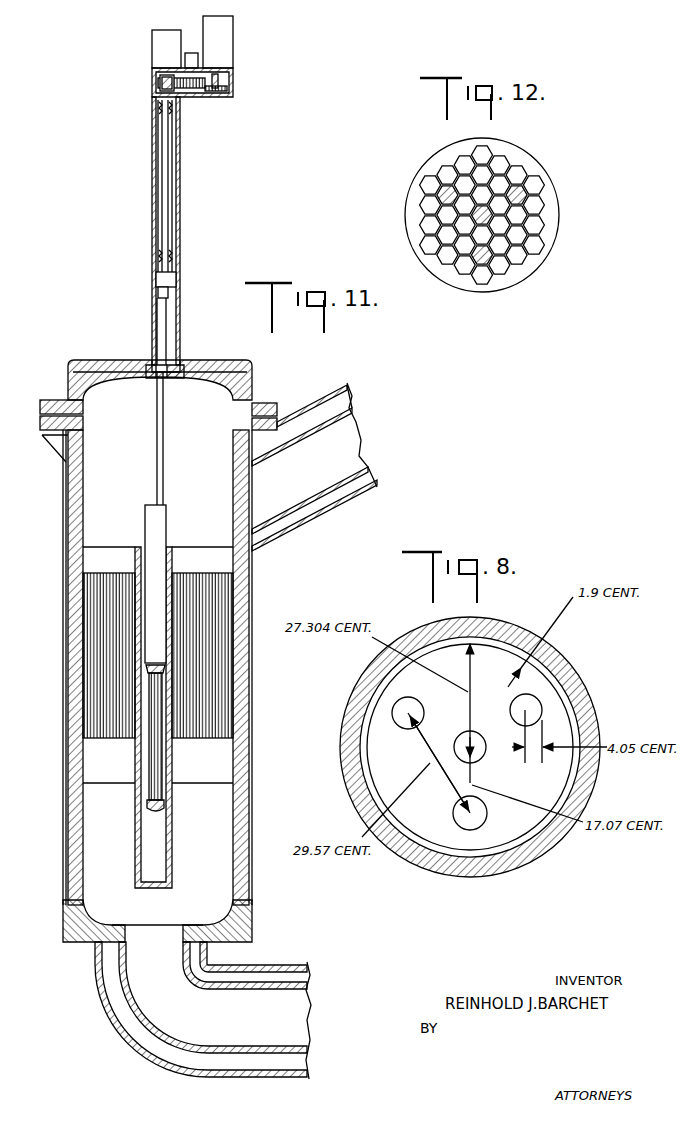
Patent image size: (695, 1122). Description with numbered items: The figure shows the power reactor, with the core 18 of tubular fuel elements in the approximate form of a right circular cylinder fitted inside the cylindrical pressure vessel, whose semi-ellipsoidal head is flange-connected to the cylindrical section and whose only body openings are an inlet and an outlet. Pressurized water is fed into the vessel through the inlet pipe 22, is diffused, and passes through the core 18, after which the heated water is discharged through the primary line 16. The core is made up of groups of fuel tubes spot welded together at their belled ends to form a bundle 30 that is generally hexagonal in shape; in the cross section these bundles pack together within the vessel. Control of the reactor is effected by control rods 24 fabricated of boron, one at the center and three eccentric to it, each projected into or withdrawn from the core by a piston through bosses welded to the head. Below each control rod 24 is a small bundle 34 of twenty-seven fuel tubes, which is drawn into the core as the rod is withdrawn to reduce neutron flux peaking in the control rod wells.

In FIG. 11, the primary line 16 is at (323, 477).
In FIG. 11, the core 18 is at (100, 650).
In FIG. 11, the inlet pipe 22 is at (270, 997).
In FIG. 11, the control rod 24 is at (150, 609).
In FIG. 12, the control rod 24 is at (524, 194).
In FIG. 12, the bundle 30 is at (464, 152).
In FIG. 11, the small bundle 34 is at (150, 760).